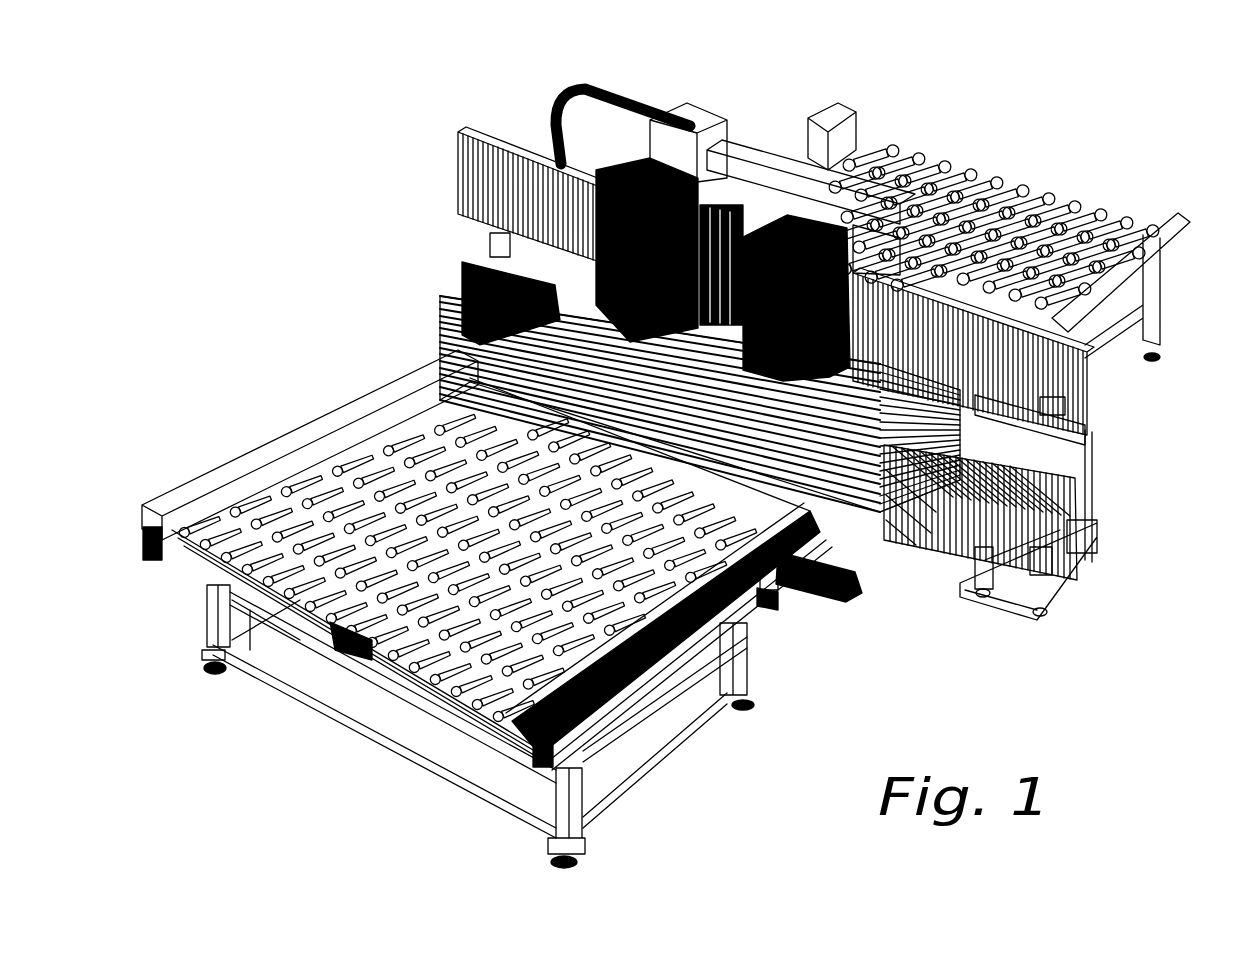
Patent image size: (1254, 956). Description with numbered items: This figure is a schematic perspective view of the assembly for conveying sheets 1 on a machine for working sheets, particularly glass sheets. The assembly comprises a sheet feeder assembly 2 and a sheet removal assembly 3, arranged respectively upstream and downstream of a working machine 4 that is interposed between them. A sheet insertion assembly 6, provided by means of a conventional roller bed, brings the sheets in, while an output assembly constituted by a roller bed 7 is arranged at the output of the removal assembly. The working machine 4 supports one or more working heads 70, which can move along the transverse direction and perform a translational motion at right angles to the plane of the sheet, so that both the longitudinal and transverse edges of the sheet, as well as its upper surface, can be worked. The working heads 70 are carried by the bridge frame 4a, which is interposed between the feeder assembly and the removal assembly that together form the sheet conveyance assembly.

The assembly for conveying sheets 1 is at (432, 92).
The sheet feeder assembly 2 is at (845, 482).
The sheet removal assembly 3 is at (983, 562).
The working machine 4 is at (1057, 232).
The bridge frame 4a is at (1062, 392).
The sheet insertion assembly 6 is at (312, 418).
The roller bed 7 is at (797, 152).
The working heads 70 is at (627, 178).